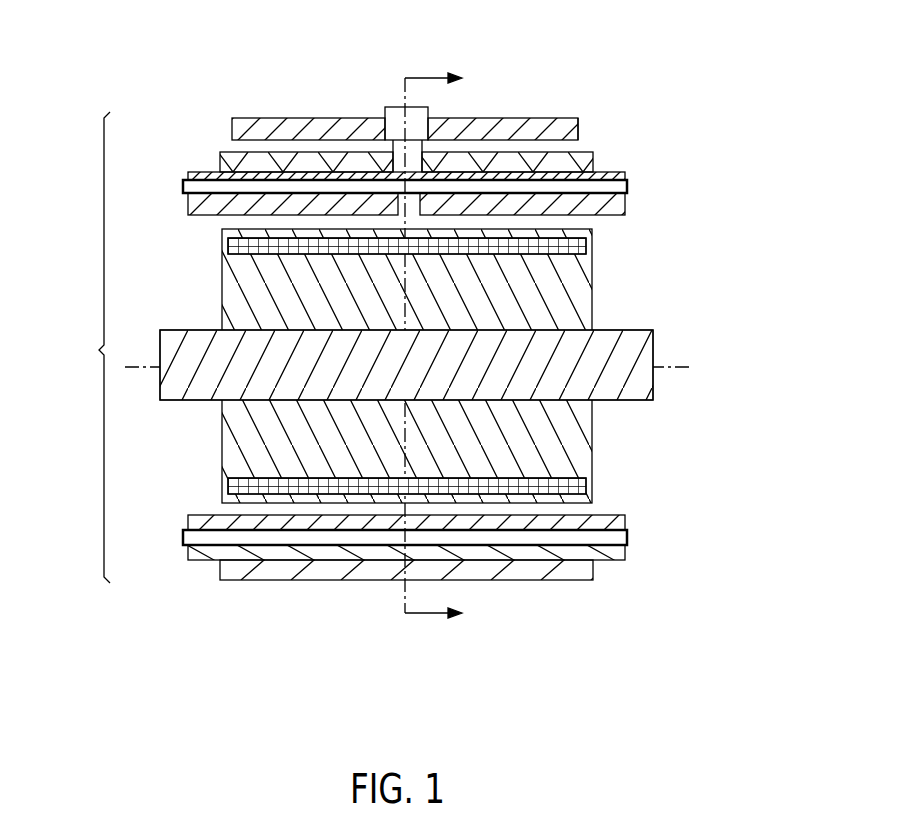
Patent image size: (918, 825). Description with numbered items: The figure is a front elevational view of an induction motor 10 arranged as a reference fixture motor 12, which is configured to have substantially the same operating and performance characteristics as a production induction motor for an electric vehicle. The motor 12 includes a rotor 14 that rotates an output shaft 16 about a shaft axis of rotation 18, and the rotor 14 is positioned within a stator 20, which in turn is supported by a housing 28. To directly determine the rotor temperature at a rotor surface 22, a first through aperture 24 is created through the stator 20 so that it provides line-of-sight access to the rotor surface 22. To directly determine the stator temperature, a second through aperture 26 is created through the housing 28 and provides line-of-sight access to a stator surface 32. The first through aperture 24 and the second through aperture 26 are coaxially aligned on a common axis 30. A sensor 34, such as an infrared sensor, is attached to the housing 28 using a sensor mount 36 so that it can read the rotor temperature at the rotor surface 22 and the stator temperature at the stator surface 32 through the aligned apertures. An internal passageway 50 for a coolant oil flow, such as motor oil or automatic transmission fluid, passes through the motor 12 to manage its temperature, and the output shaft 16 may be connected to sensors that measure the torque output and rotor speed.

The electric machine 10 is at (634, 70).
The reference fixture motor 12 is at (92, 347).
The rotor 14 is at (583, 290).
The output shaft 16 is at (617, 345).
The shaft axis of rotation 18 is at (660, 370).
The stator 20 is at (625, 201).
The rotor surface 22 is at (432, 162).
The first through aperture 24 is at (340, 137).
The second through aperture 26 is at (425, 160).
The housing 28 is at (230, 158).
The common axis 30 is at (406, 295).
The stator surface 32 is at (412, 222).
The sensor 34 is at (395, 106).
The sensor mount 36 is at (580, 136).
The internal passageway 50 is at (628, 186).